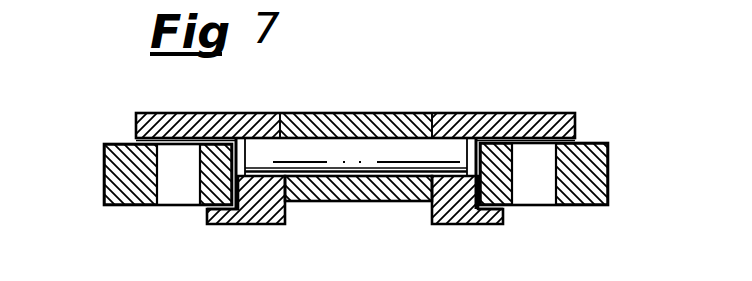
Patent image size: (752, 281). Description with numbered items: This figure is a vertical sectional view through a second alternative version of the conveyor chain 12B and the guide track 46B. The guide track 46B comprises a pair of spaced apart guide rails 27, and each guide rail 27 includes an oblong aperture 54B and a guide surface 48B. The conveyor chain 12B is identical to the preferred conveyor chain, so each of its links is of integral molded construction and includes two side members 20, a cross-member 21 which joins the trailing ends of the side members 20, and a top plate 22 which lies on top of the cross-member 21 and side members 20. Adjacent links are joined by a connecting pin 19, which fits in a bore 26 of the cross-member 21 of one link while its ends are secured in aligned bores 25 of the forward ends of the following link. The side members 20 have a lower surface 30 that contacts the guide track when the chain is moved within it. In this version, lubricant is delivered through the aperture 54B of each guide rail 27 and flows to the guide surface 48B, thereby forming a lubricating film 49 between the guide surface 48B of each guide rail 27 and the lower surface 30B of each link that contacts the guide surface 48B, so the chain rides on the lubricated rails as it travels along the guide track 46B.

The conveyor chain 12B is at (480, 87).
The connecting pin 19 is at (372, 148).
The side members 20 is at (266, 225).
The cross-member 21 is at (318, 204).
The top plate 22 is at (200, 113).
The aligned bores 25 is at (442, 150).
The bore 26 is at (314, 150).
The guide rails 27 is at (113, 172).
The lower surface 30 is at (247, 230).
The lower surface 30B is at (180, 151).
The guide track 46B is at (611, 183).
The guide surface 48B is at (108, 142).
The lubricating film 49 is at (130, 142).
The oblong aperture 54B is at (175, 188).